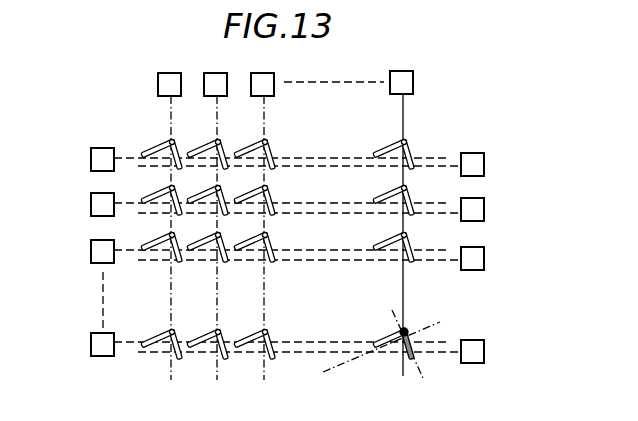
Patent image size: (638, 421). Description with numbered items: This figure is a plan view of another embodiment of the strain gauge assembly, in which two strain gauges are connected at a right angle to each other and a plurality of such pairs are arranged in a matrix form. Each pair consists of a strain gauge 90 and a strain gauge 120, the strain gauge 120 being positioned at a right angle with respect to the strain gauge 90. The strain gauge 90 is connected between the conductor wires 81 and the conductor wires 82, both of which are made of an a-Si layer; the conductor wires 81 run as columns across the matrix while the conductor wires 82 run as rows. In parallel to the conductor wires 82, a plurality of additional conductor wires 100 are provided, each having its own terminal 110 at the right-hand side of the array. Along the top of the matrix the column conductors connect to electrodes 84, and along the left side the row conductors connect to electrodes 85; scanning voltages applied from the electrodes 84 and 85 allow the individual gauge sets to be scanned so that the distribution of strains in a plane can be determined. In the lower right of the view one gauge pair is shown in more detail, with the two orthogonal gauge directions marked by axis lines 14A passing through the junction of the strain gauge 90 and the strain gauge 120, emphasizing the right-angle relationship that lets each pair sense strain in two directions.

The electrode 84 is at (158, 86).
The electrode 85 is at (91, 163).
The terminal 110 is at (484, 162).
The strain gauge 90 is at (251, 154).
The strain gauge 120 is at (270, 156).
The conductor wire 82 is at (338, 158).
The conductor wire 100 is at (320, 167).
The conductor wire 81 is at (171, 312).
The pivot axis 14A is at (379, 357).